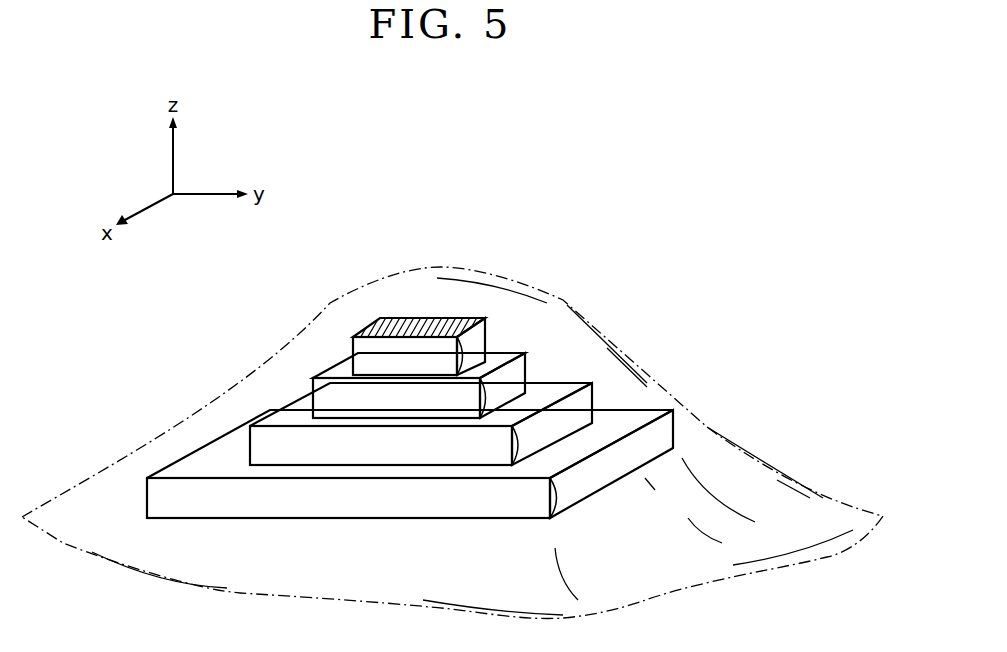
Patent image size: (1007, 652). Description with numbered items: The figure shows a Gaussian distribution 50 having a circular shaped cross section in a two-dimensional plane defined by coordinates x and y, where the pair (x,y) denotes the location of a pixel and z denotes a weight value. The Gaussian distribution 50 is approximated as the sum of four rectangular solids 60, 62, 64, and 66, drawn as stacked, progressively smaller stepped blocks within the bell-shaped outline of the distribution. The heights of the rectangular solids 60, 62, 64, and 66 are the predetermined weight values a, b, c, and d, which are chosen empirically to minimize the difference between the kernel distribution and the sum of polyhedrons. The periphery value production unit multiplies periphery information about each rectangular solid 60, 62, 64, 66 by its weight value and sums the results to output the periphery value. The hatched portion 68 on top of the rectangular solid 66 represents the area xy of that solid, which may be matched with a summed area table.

The Gaussian distribution 50 is at (527, 285).
The rectangular solid 60 is at (175, 497).
The rectangular solid 62 is at (265, 443).
The rectangular solid 64 is at (517, 372).
The rectangular solid 66 is at (368, 350).
The hatched portion 68 is at (427, 318).